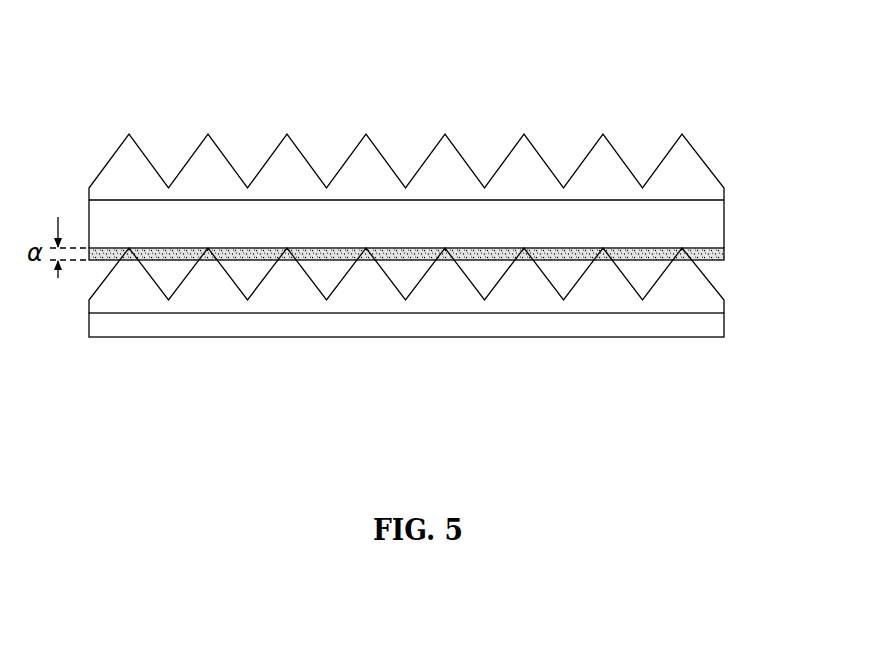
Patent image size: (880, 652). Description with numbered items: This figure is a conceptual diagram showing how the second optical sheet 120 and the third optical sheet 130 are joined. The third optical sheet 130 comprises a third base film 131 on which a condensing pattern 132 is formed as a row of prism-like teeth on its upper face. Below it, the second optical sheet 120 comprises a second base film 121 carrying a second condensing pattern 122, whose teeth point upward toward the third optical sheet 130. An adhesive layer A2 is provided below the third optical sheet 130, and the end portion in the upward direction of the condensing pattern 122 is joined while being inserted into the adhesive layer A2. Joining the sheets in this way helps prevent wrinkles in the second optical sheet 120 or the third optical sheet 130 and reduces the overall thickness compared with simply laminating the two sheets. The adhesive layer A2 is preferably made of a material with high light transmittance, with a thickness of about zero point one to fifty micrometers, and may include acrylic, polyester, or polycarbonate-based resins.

The third optical sheet 130 is at (406, 135).
The third base film 131 is at (432, 213).
The condensing pattern 132 is at (515, 170).
The second optical sheet 120 is at (406, 355).
The second base film 121 is at (370, 320).
The condensing pattern 122 is at (288, 287).
The adhesive layer A2 is at (724, 250).